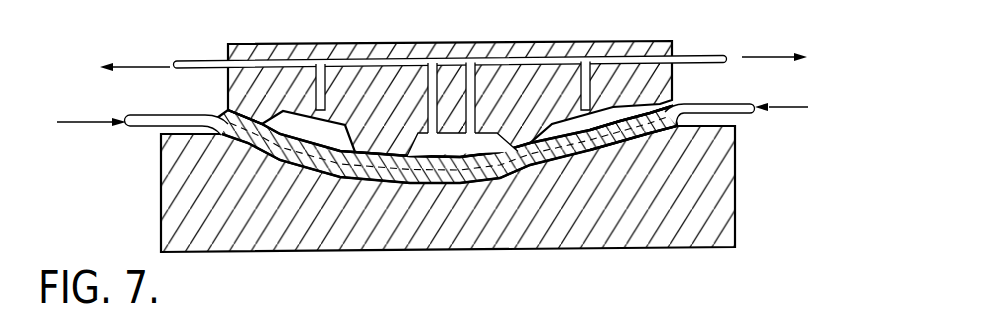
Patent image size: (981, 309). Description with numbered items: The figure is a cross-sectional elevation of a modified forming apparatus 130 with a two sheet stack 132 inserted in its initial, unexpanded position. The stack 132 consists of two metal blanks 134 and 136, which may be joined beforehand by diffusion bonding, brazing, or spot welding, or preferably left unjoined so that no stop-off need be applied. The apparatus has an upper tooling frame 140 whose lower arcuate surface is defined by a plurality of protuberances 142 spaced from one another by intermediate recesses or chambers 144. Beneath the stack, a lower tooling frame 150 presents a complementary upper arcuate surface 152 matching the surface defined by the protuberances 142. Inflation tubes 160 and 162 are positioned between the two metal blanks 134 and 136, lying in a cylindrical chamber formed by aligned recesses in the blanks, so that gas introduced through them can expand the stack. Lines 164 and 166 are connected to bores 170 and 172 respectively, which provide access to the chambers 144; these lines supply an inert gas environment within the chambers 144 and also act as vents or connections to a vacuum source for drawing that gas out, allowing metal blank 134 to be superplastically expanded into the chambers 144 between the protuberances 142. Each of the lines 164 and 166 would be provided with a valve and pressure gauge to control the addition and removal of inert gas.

The forming apparatus 130 is at (690, 29).
The two sheet stack 132 is at (513, 207).
The metal blank 134 is at (667, 100).
The metal blank 136 is at (657, 109).
The upper tooling frame 140 is at (453, 49).
The protuberances 142 is at (449, 140).
The recesses or chambers 144 is at (286, 140).
The lower tooling frame 150 is at (516, 237).
The upper arcuate surface 152 is at (351, 178).
The inflation tube 160 is at (738, 112).
The inflation tube 162 is at (170, 116).
The line 164 is at (710, 54).
The line 166 is at (194, 34).
The bore 170 is at (560, 51).
The bore 172 is at (340, 63).